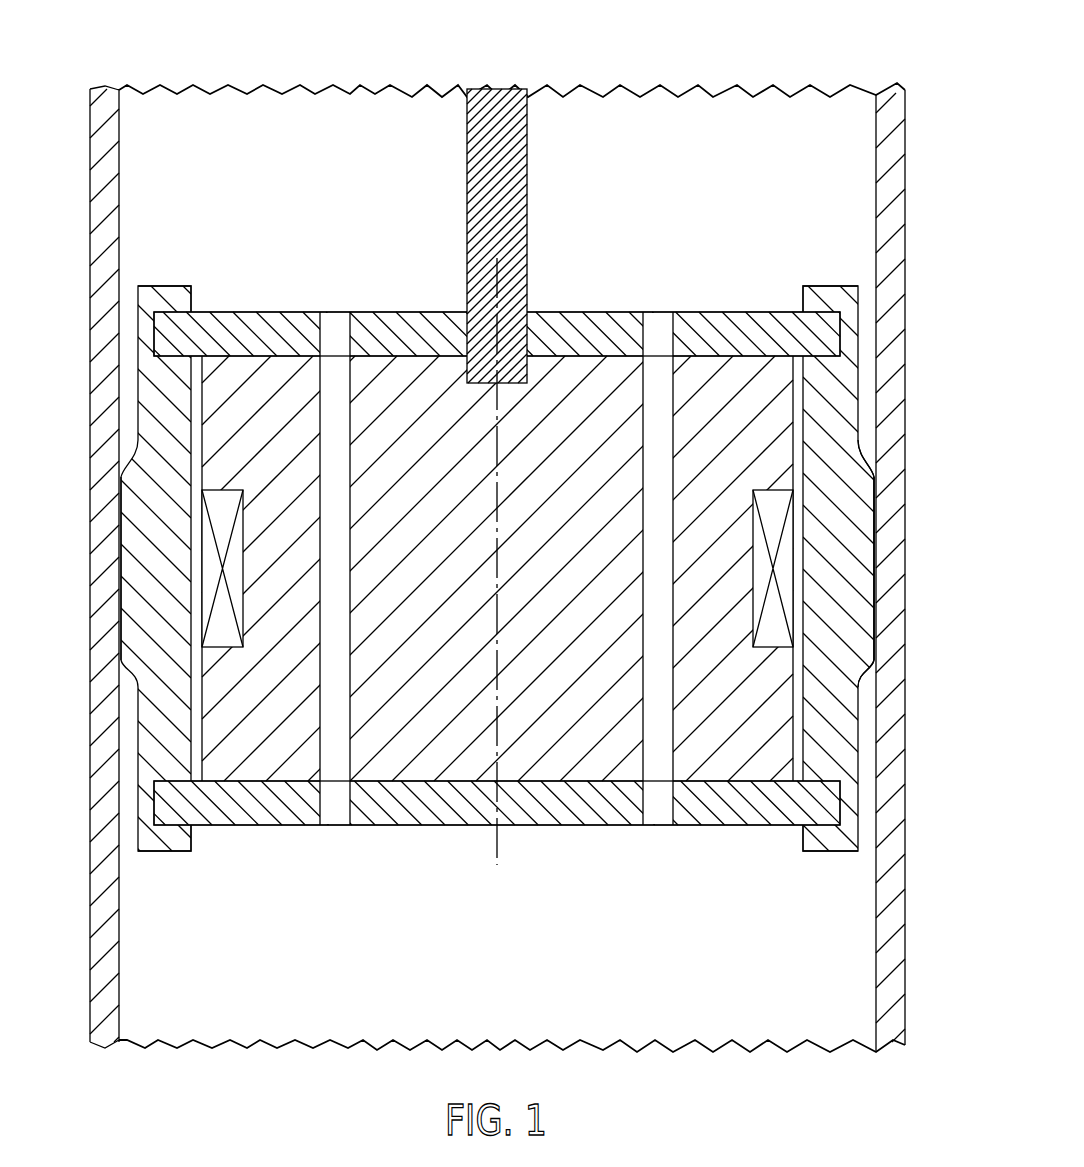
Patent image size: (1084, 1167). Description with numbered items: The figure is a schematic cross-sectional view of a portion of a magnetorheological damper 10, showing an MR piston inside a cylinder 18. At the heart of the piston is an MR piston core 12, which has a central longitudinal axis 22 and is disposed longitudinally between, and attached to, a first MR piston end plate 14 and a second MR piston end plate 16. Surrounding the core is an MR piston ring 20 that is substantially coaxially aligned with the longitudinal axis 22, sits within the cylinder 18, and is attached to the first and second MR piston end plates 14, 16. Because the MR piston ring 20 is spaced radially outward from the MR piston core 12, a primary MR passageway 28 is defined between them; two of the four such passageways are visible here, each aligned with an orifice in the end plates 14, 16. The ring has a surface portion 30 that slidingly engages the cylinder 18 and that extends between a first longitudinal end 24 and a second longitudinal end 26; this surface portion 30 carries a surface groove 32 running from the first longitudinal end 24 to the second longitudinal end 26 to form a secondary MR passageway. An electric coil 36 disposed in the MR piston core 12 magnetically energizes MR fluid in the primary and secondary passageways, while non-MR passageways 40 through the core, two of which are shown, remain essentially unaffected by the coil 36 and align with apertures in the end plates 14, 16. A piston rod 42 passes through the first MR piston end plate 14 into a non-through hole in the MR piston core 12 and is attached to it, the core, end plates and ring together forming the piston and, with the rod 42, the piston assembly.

The magnetorheological (MR) damper 10 is at (935, 66).
The MR piston core 12 is at (592, 516).
The first MR piston end plate 14 is at (585, 318).
The second MR piston end plate 16 is at (568, 822).
The cylinder 18 is at (897, 204).
The MR piston ring 20 is at (850, 380).
The central longitudinal axis 22 is at (497, 527).
The first longitudinal end 24 is at (876, 478).
The second longitudinal end 26 is at (876, 667).
The primary MR passageway 28 is at (192, 738).
The surface portion 30 is at (876, 533).
The surface groove 32 is at (122, 527).
The electric coil 36 is at (755, 566).
The non-MR passageway 40 is at (338, 622).
The piston rod 42 is at (470, 200).